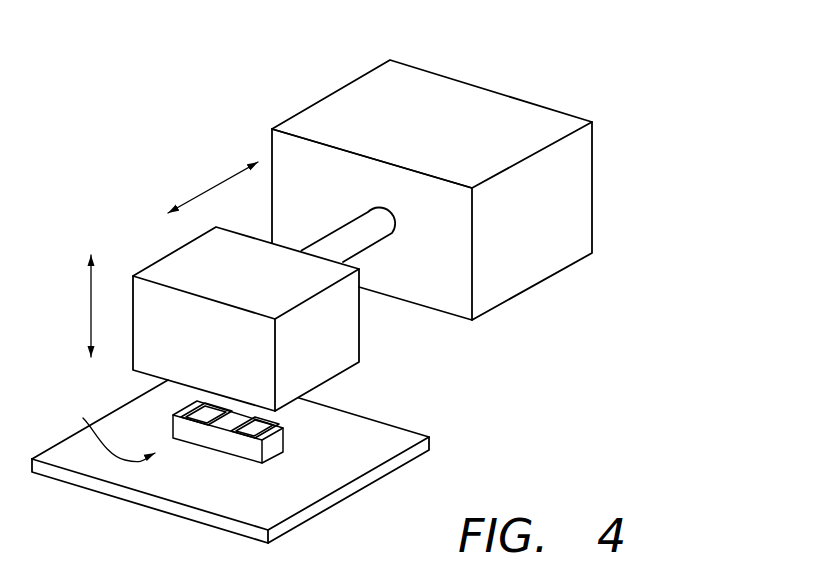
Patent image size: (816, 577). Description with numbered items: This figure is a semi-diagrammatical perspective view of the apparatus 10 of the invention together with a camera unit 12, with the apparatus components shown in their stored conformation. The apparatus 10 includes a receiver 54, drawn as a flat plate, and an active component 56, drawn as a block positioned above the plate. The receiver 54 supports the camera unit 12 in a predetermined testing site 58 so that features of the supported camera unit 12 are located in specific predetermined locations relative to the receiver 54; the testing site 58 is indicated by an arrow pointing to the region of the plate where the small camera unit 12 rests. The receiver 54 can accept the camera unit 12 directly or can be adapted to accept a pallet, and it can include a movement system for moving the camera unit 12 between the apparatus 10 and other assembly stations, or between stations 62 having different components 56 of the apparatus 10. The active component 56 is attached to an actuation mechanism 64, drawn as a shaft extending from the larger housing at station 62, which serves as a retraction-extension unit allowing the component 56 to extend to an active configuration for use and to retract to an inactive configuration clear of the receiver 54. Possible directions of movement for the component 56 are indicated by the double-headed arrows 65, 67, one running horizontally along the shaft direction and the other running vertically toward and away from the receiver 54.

The apparatus 10 is at (568, 62).
The camera unit 12 is at (247, 450).
The receiver 54 is at (430, 446).
The active component 56 is at (353, 340).
The testing site 58 is at (101, 425).
The station 62 is at (593, 185).
The actuation mechanism 64 is at (332, 233).
The double-headed arrow 65 is at (222, 182).
The double-headed arrow 67 is at (91, 312).